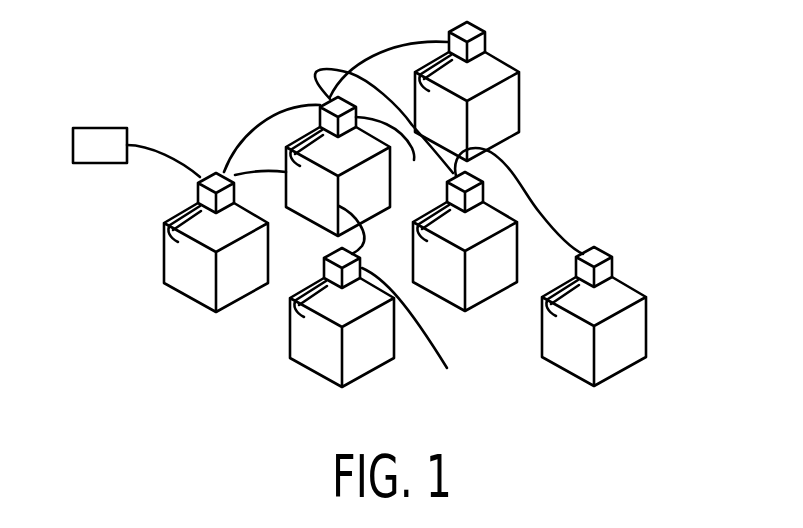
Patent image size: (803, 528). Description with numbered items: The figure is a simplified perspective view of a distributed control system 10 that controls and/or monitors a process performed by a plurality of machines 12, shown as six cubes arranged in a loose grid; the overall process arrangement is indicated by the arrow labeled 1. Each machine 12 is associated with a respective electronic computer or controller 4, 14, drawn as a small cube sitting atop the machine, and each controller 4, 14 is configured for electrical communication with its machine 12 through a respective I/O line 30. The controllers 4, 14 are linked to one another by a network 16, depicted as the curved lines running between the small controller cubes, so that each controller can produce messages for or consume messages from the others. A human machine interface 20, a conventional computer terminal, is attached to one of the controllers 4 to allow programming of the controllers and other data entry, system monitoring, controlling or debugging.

The sensor network system 1 is at (261, 406).
The controller 4 is at (217, 176).
The distributed control system 10 is at (569, 126).
The machine 12 is at (380, 352).
The controller 14 is at (417, 333).
The network 16 is at (528, 197).
The human machine interface 20 is at (108, 127).
The I/O line 30 is at (176, 226).